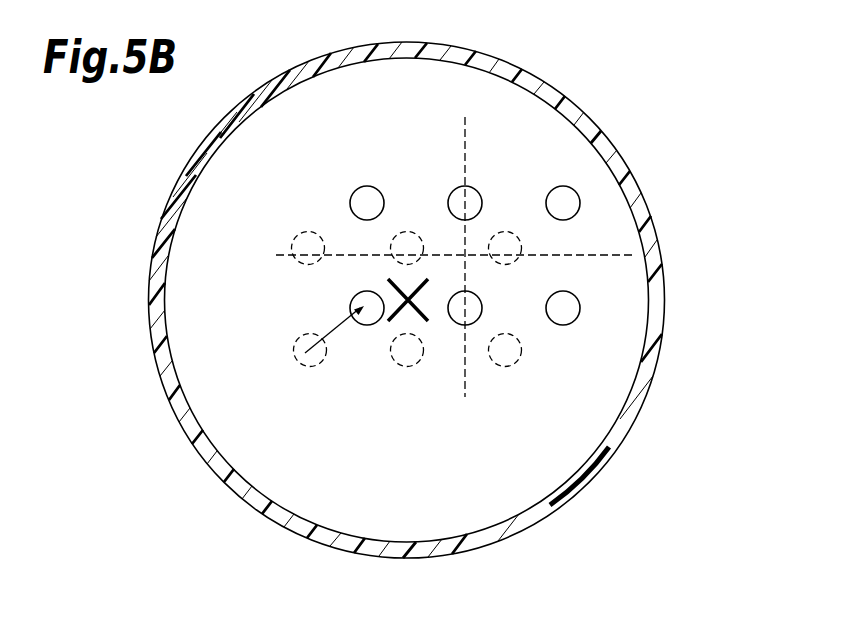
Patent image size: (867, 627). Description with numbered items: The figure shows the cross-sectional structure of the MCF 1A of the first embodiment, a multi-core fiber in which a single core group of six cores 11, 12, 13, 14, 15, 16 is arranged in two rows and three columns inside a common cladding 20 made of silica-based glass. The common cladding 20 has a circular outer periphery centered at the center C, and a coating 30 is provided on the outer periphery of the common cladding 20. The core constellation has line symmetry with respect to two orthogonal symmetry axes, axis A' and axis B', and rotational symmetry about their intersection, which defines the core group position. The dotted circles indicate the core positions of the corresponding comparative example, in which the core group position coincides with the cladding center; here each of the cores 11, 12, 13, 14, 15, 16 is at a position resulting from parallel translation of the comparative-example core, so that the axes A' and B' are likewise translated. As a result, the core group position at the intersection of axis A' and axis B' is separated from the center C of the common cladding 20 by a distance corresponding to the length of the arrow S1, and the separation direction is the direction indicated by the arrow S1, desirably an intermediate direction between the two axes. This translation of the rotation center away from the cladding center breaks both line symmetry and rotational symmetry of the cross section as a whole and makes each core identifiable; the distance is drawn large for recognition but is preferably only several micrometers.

The MCF 1A is at (640, 147).
The core 11 is at (367, 186).
The core 12 is at (472, 186).
The core 13 is at (562, 186).
The core 14 is at (368, 325).
The core 15 is at (465, 325).
The core 16 is at (563, 325).
The common cladding 20 is at (620, 362).
The coating 30 is at (618, 427).
The center C is at (418, 303).
The arrow S1 is at (337, 325).
The axis A' is at (439, 255).
The axis B' is at (454, 286).